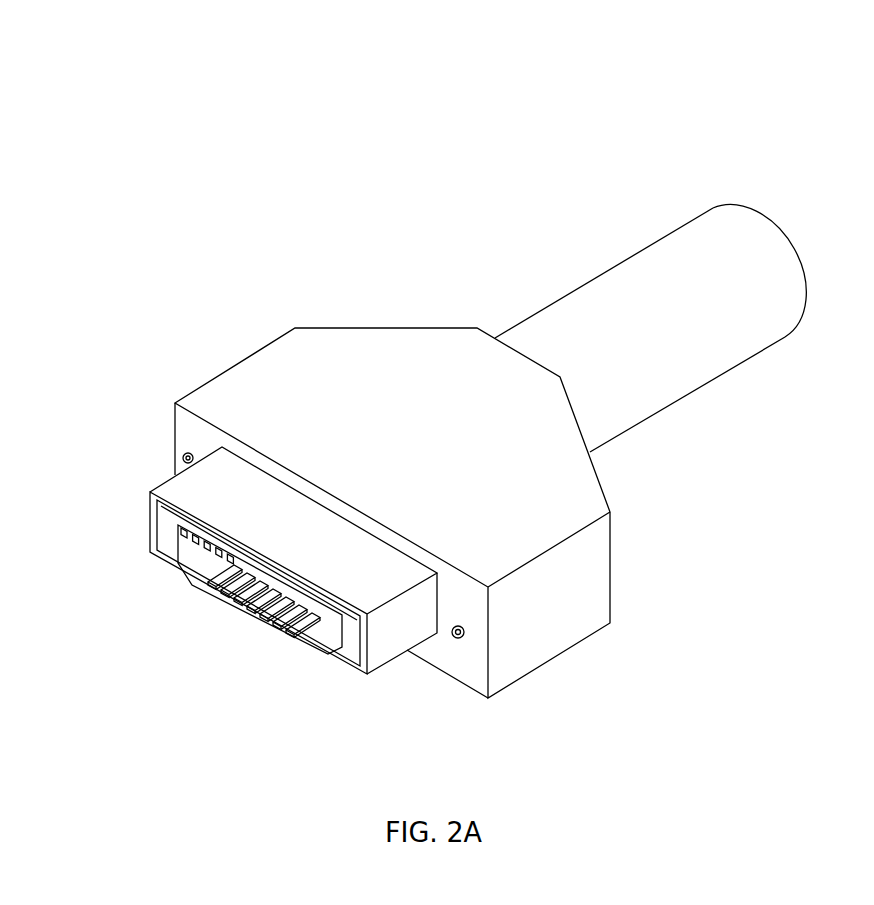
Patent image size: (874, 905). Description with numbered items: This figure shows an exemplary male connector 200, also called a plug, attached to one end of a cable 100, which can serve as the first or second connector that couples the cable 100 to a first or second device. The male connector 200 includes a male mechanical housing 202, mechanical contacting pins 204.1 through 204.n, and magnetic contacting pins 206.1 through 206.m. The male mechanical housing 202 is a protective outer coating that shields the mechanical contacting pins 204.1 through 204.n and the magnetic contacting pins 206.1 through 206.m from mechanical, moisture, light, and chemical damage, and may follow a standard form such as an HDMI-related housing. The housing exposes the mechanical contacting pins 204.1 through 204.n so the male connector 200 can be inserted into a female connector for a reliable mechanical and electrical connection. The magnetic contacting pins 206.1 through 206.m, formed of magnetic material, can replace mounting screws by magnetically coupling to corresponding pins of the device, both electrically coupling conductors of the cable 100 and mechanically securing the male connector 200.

The male connector 200 is at (827, 121).
The cable 100 is at (714, 207).
The male mechanical housing 202 is at (346, 327).
The mechanical contacting pin 204.1 is at (178, 526).
The mechanical contacting pin 204.n is at (193, 586).
The magnetic contacting pin 206.1 is at (183, 456).
The magnetic contacting pin 206.m is at (454, 641).